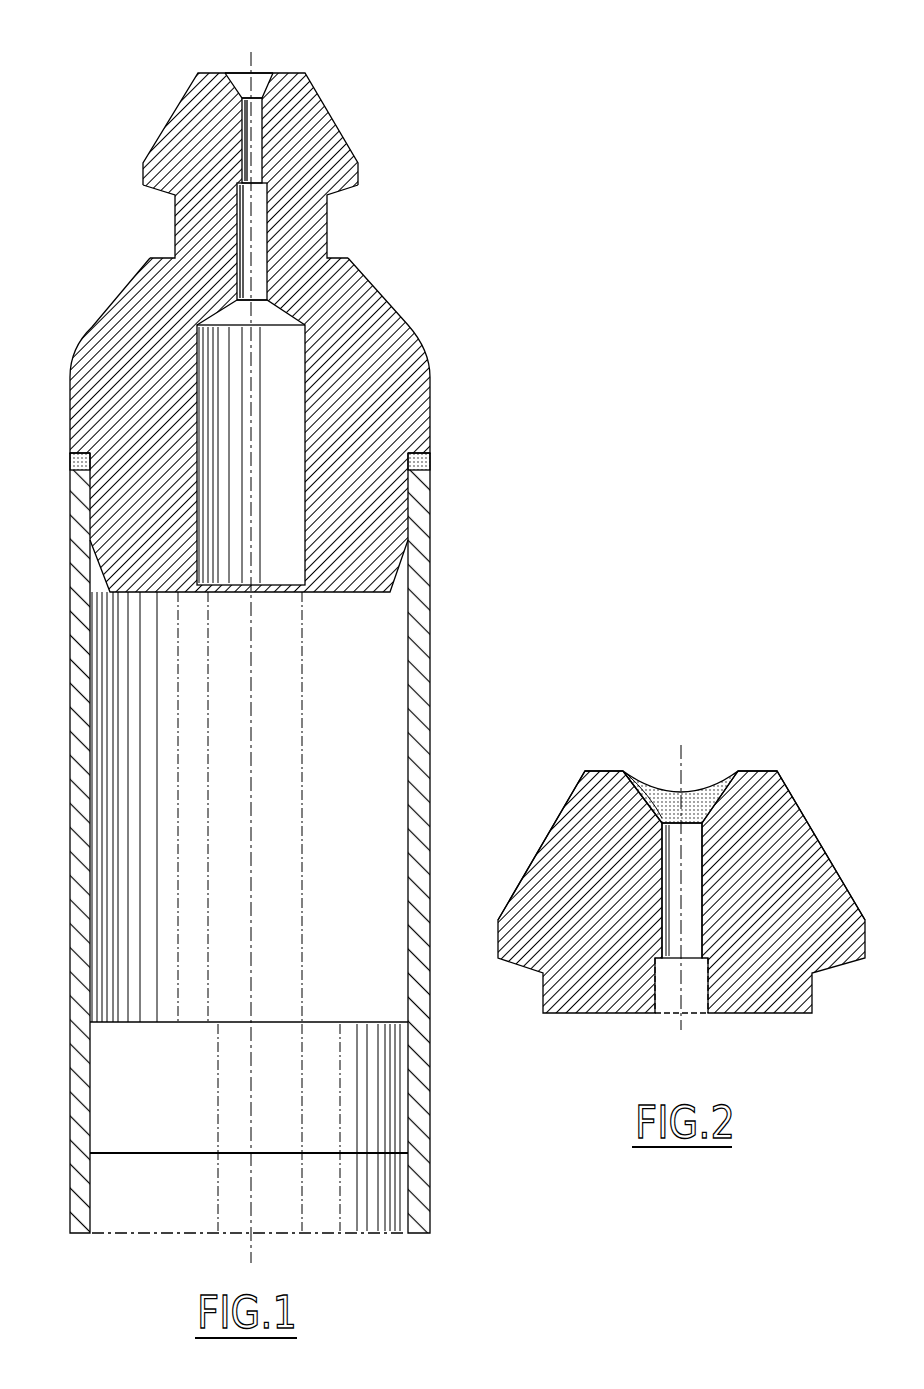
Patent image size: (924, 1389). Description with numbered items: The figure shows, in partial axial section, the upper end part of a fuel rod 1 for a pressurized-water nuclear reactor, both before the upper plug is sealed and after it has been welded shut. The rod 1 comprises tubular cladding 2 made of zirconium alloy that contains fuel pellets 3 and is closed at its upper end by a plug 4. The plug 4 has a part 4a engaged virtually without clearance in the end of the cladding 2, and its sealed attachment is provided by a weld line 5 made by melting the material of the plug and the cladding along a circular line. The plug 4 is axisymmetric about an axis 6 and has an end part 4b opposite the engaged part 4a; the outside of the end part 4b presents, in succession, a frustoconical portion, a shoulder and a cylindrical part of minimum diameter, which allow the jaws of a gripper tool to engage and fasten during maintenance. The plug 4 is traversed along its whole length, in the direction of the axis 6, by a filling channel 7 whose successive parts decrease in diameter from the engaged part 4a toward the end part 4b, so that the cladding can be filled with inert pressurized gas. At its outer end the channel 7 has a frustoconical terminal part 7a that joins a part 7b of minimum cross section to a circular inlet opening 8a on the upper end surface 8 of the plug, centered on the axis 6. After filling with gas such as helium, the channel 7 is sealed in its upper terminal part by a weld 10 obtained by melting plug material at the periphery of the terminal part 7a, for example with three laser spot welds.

In FIG. 1, the fuel rod 1 is at (468, 632).
In FIG. 1, the tubular cladding 2 is at (413, 752).
In FIG. 1, the fuel pellets 3 is at (375, 1188).
In FIG. 1, the plug 4 is at (368, 373).
In FIG. 1, the part engaged in cladding 4a is at (374, 527).
In FIG. 1, the end part 4b is at (323, 167).
In FIG. 1, the weld line 5 is at (420, 462).
In FIG. 1, the axis 6 is at (250, 527).
In FIG. 2, the axis 6 is at (687, 767).
In FIG. 1, the filling channel 7 is at (223, 428).
In FIG. 1, the terminal part 7a is at (272, 88).
In FIG. 1, the part of minimum cross section 7b is at (257, 135).
In FIG. 2, the part of minimum cross section 7b is at (690, 883).
In FIG. 1, the upper end surface 8 is at (208, 72).
In FIG. 2, the upper end surface 8 is at (622, 772).
In FIG. 1, the inlet opening 8a is at (278, 72).
In FIG. 2, the weld 10 is at (748, 773).